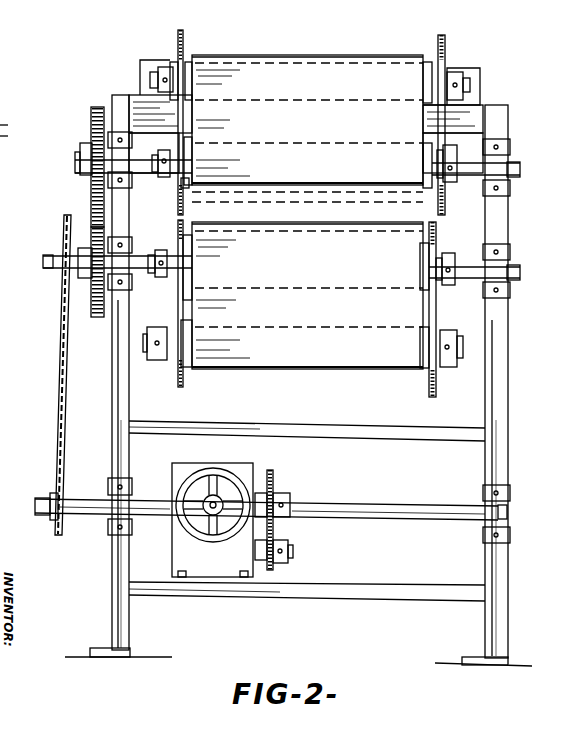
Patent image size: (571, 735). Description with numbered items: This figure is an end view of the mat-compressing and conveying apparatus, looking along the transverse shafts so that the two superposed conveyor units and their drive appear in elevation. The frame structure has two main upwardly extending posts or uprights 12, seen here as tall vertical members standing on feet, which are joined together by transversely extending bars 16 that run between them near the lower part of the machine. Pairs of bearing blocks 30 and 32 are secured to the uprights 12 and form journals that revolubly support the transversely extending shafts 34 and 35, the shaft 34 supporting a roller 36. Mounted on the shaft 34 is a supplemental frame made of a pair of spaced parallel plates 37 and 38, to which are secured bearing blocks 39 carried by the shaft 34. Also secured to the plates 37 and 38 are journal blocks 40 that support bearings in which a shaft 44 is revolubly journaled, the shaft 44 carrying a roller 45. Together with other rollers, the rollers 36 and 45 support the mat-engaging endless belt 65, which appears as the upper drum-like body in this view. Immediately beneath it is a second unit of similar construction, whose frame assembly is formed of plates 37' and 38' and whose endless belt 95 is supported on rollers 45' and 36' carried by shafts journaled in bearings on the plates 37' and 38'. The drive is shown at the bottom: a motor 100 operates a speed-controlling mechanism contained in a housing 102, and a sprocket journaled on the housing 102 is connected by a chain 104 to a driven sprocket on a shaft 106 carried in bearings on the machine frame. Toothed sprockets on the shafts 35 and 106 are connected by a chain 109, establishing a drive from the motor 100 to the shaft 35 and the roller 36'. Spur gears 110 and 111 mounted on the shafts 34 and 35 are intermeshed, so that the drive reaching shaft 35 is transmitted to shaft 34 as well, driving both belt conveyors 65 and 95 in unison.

The upright 12 is at (112, 405).
The transversely extending bar 16 is at (372, 433).
The bearing block 30 is at (126, 170).
The bearing block 32 is at (120, 258).
The shaft 34 is at (512, 163).
The shaft 35 is at (512, 268).
The roller 36 is at (160, 193).
The roller 36' is at (297, 290).
The plate 37 is at (478, 125).
The plate 37' is at (452, 312).
The plate 38 is at (198, 121).
The plate 38' is at (155, 307).
The bearing block 39 is at (168, 150).
The journal block 40 is at (173, 62).
The shaft 44 is at (150, 77).
The roller 45 is at (417, 114).
The roller 45' is at (406, 322).
The endless belt 65 is at (366, 72).
The endless belt 95 is at (350, 360).
The motor 100 is at (196, 532).
The housing 102 is at (172, 538).
The chain 104 is at (290, 536).
The shaft 106 is at (362, 518).
The chain 109 is at (62, 350).
The spur gear 110 is at (90, 130).
The spur gear 111 is at (92, 222).